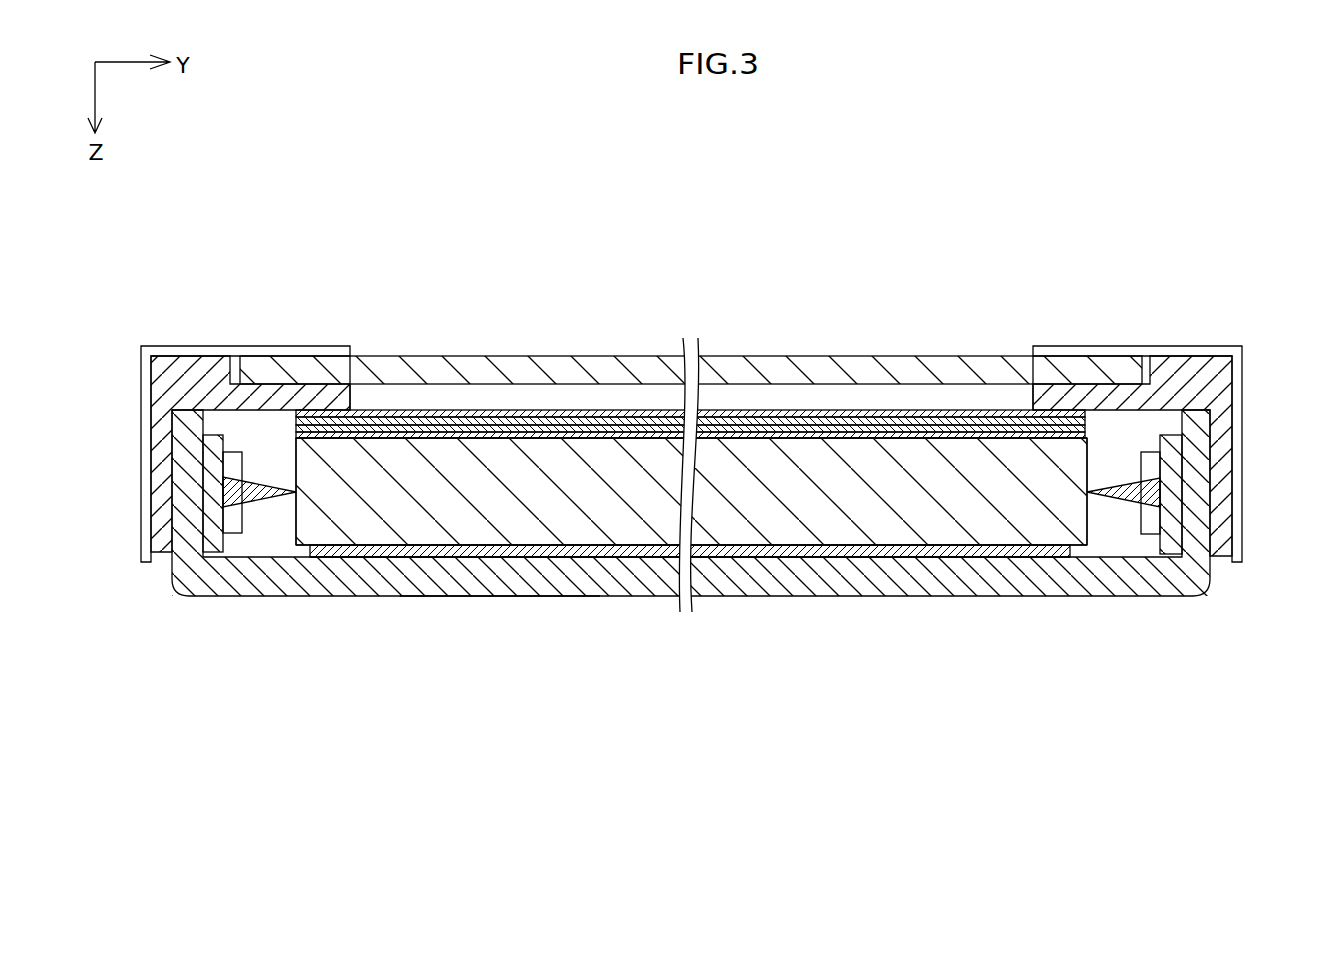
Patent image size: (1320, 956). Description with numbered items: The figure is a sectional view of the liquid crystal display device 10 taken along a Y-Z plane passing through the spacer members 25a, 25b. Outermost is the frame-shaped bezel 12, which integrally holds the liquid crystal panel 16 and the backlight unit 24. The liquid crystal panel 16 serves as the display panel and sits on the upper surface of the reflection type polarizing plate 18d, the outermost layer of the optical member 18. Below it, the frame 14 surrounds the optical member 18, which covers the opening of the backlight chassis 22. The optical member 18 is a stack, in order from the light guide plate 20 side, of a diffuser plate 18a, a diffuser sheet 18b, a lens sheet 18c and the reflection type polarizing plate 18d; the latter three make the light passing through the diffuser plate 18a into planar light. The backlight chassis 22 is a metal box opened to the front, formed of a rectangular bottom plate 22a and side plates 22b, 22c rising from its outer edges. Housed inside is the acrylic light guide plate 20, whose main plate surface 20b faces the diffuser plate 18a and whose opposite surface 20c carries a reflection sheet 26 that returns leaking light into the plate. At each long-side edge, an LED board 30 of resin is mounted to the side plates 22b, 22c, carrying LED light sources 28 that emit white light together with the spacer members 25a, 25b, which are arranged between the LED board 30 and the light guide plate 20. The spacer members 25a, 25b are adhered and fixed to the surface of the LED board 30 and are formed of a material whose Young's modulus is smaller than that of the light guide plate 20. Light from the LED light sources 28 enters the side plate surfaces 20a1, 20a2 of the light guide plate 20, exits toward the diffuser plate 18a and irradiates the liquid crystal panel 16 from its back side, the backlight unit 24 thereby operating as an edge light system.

The liquid crystal display device 10 is at (327, 308).
The bezel 12 is at (170, 350).
The frame 14 is at (198, 358).
The liquid crystal panel 16 is at (284, 358).
The optical member 18 is at (690, 351).
The diffuser plate 18a is at (650, 307).
The diffuser sheet 18b is at (520, 428).
The lens sheet 18c is at (560, 422).
The reflection type polarizing plate 18d is at (617, 412).
The light guide plate 20 is at (690, 562).
The side plate surface (light entrance surface) 20a1 is at (297, 522).
The side plate surface (light entrance surface) 20a2 is at (1087, 522).
The main plate surface (light exit surface) 20b is at (978, 437).
The surface opposite the diffuser plate 20c is at (850, 548).
The backlight chassis 22 is at (695, 547).
The bottom plate 22a is at (558, 556).
The side plate 22b is at (183, 483).
The side plate 22c is at (1195, 487).
The backlight unit 24 is at (483, 612).
The spacer member 25a is at (244, 500).
The spacer member 25b is at (1137, 503).
The reflection sheet 26 is at (353, 550).
The LED light source 28 is at (229, 452).
The LED board 30 is at (210, 522).